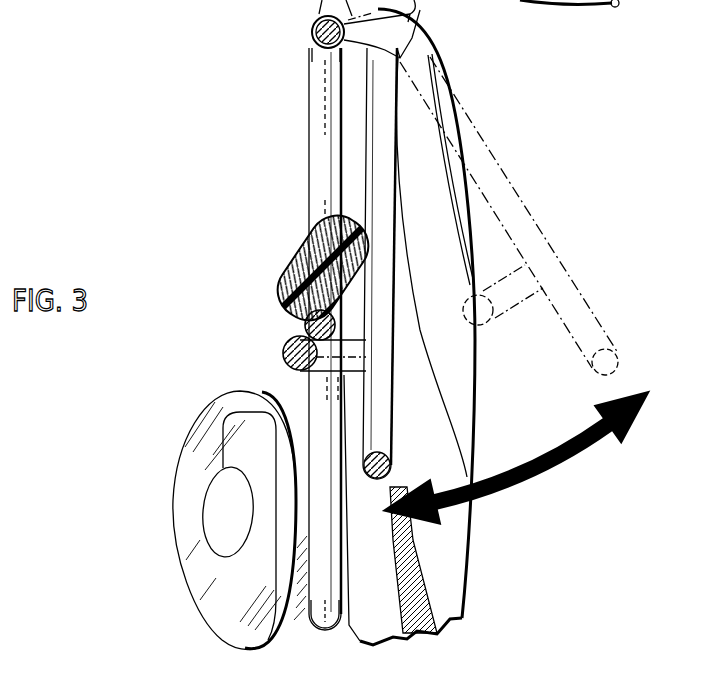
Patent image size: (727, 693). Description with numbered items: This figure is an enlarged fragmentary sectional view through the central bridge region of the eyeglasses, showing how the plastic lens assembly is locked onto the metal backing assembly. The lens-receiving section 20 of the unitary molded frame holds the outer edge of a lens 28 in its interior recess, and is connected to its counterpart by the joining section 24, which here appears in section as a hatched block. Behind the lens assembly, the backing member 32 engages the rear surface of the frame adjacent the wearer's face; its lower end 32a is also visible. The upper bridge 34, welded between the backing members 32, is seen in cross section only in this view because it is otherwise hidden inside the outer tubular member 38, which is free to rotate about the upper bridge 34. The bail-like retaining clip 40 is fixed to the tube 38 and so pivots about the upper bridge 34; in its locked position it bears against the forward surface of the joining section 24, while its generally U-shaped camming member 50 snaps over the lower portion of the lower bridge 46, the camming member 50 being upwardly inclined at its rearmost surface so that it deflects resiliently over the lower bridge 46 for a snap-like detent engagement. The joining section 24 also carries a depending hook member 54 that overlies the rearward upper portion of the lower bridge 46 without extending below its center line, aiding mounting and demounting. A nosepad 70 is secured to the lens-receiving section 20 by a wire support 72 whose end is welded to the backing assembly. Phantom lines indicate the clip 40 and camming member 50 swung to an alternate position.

The lens-receiving section 20 is at (153, 0).
The joining section 24 is at (296, 247).
The lens 28 is at (462, 415).
The backing member 32 is at (318, 158).
The lower end of tube 32a is at (306, 630).
The upper bridge 34 is at (312, 26).
The outer tubular member 38 is at (318, 46).
The retaining clip 40 is at (390, 176).
The lower bridge 46 is at (298, 332).
The camming member 50 is at (282, 356).
The depending hook member 54 is at (303, 318).
The nosepad 70 is at (187, 493).
The wire support 72 is at (238, 403).